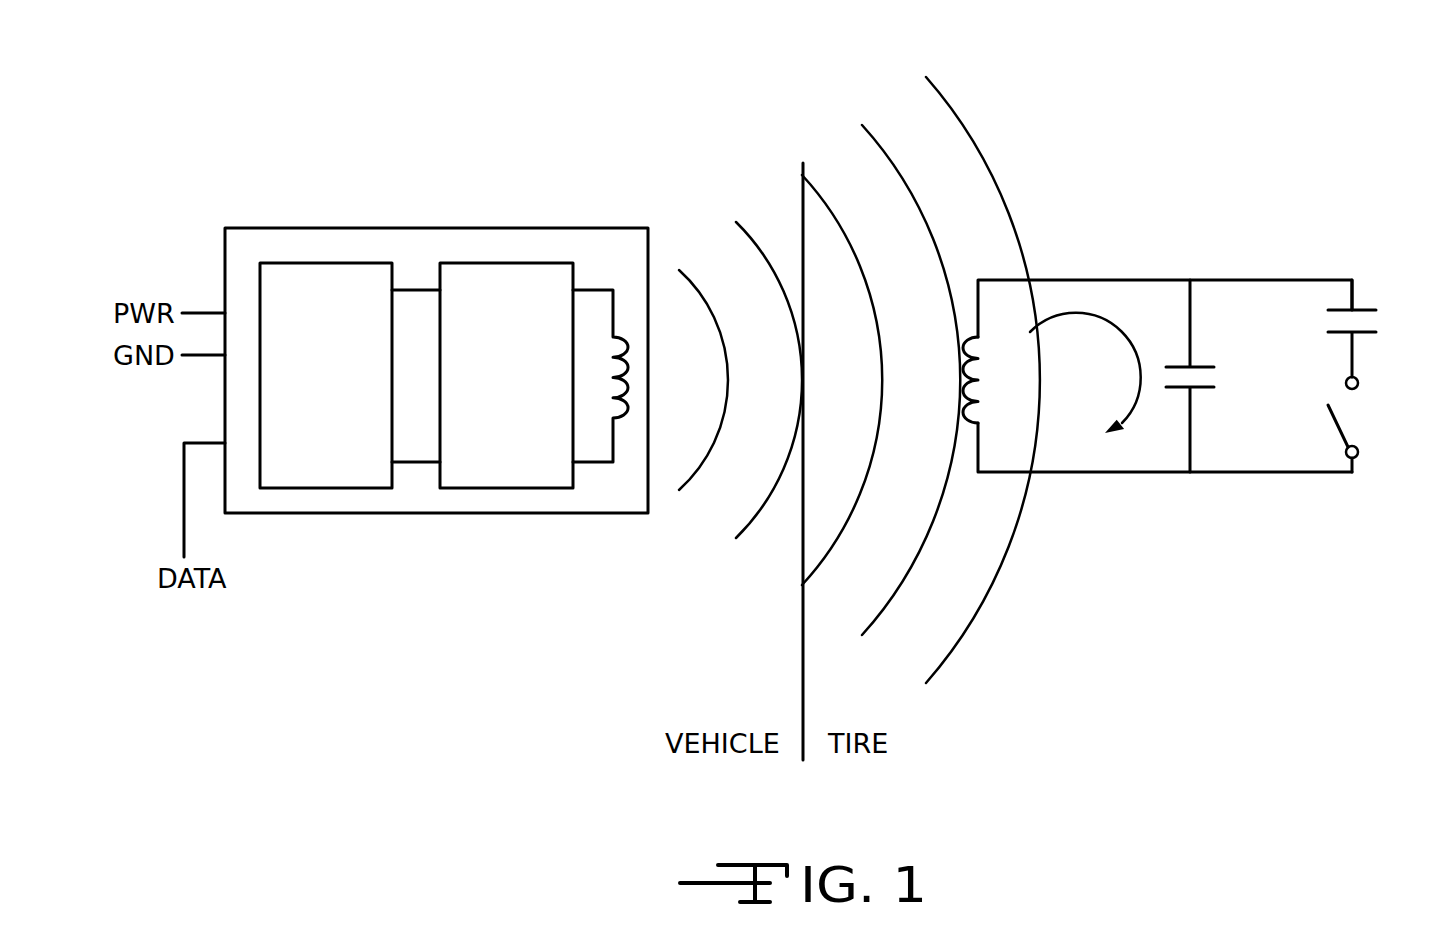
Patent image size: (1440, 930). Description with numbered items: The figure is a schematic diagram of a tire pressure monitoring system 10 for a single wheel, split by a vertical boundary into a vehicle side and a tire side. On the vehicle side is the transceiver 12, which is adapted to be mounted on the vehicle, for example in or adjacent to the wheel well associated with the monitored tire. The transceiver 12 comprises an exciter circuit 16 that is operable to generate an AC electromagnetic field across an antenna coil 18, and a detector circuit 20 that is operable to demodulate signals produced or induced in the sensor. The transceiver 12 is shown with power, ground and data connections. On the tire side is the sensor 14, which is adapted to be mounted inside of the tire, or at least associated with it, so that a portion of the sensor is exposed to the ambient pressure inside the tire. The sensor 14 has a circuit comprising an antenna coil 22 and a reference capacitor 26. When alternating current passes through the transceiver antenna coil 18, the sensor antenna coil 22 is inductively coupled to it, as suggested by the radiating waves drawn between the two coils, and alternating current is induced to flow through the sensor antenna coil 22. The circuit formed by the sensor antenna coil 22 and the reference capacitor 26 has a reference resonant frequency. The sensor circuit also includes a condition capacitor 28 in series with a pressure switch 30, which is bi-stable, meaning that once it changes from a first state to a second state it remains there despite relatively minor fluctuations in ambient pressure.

The tire pressure monitoring system 10 is at (1300, 618).
The transceiver 12 is at (414, 536).
The sensor 14 is at (1218, 238).
The exciter circuit 16 is at (317, 488).
The antenna coil 18 is at (627, 362).
The detector circuit 20 is at (474, 263).
The antenna coil 22 is at (962, 385).
The reference capacitor 26 is at (1200, 366).
The condition capacitor 28 is at (1357, 308).
The pressure switch 30 is at (1338, 425).